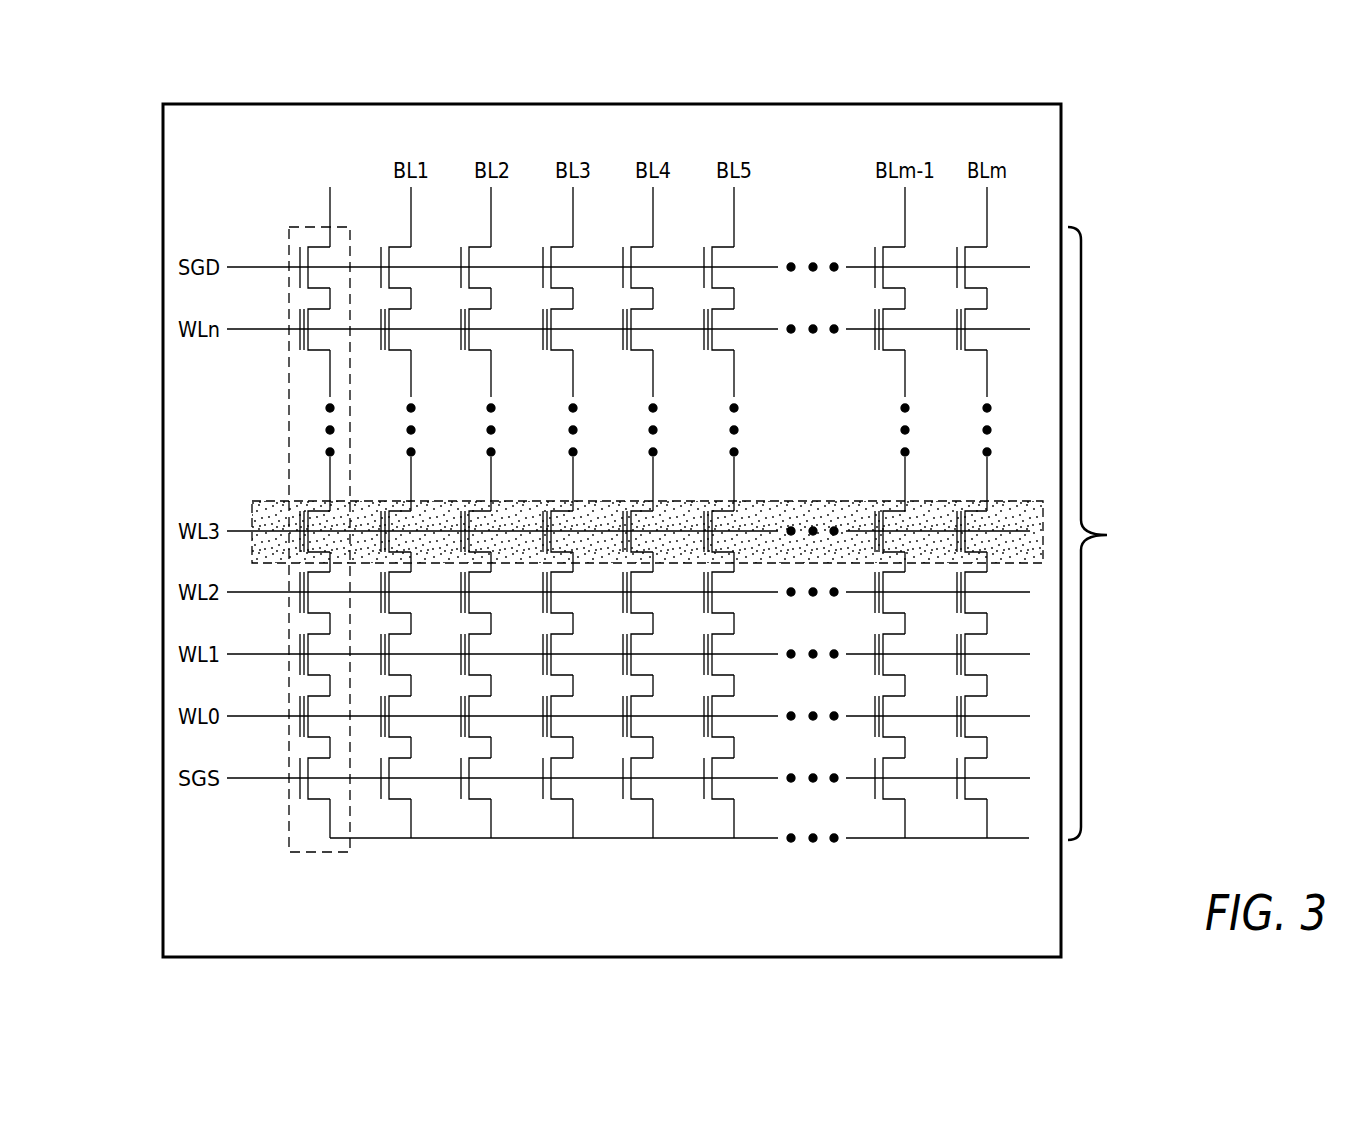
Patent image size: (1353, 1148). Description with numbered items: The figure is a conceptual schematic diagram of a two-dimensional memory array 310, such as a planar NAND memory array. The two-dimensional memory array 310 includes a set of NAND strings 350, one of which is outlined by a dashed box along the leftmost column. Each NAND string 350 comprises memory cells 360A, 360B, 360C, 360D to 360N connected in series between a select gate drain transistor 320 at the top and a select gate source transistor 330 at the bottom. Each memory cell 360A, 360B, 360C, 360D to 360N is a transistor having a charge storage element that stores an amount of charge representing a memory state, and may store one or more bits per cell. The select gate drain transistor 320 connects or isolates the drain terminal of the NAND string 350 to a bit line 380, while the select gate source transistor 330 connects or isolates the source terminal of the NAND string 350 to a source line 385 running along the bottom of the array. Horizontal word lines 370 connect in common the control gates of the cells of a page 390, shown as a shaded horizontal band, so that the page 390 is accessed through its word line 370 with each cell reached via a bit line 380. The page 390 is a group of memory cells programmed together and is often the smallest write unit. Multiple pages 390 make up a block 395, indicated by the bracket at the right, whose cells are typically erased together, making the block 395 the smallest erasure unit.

The two-dimensional memory array 310 is at (641, 103).
The select gate drain transistor 320 is at (332, 258).
The select gate source transistor 330 is at (327, 785).
The NAND string 350 is at (332, 852).
The memory cell 360A is at (302, 705).
The memory cell 360B is at (302, 642).
The memory cell 360C is at (302, 580).
The memory cell 360D is at (302, 517).
The memory cell 360N is at (302, 333).
The word line 370 is at (195, 730).
The bit line 380 is at (308, 170).
The source line 385 is at (1003, 840).
The page 390 is at (1010, 500).
The block 395 is at (1107, 533).